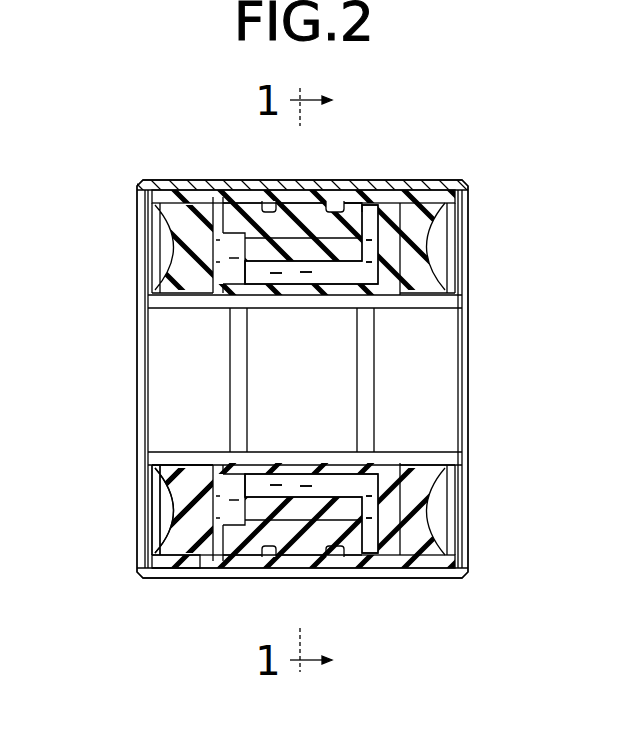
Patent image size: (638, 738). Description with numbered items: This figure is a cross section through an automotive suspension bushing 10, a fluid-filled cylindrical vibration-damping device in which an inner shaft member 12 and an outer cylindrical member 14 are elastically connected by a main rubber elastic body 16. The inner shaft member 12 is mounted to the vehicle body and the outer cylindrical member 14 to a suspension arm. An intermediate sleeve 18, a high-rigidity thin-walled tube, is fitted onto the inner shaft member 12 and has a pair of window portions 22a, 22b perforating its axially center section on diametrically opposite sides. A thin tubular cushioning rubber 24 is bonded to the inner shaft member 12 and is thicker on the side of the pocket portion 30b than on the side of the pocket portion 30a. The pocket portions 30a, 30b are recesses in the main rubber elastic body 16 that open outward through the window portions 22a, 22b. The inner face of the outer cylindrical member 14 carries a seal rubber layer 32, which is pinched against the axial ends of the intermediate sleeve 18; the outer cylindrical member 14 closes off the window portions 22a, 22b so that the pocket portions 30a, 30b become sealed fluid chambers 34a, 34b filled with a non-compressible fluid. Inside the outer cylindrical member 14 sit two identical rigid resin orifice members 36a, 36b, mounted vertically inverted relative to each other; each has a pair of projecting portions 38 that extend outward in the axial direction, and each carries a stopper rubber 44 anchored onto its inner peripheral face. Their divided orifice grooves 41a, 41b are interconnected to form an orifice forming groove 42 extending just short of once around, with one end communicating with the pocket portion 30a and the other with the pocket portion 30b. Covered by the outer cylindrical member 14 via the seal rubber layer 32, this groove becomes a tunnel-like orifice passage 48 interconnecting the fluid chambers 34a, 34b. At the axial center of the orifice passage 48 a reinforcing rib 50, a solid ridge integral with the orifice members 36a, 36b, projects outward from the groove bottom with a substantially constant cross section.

The automotive suspension bushing 10 is at (434, 160).
The inner shaft member 12 is at (455, 460).
The outer cylindrical member 14 is at (438, 578).
The main rubber elastic body 16 is at (195, 520).
The intermediate sleeve 18 is at (178, 560).
The window portion 22a is at (215, 200).
The window portion 22b is at (398, 565).
The cushioning rubber 24 is at (278, 476).
The pocket portion 30a is at (210, 263).
The pocket portion 30b is at (228, 488).
The seal rubber layer 32 is at (180, 190).
The fluid chamber 34a is at (345, 273).
The fluid chamber 34b is at (370, 483).
The orifice member 36a is at (270, 233).
The orifice member 36b is at (248, 545).
The projecting portion 38 is at (383, 210).
The divided orifice groove 41a is at (264, 203).
The divided orifice groove 41b is at (352, 563).
The orifice forming groove 42 is at (337, 205).
The stopper rubber 44 is at (346, 250).
The orifice passage 48 is at (331, 200).
The reinforcing rib 50 is at (324, 560).